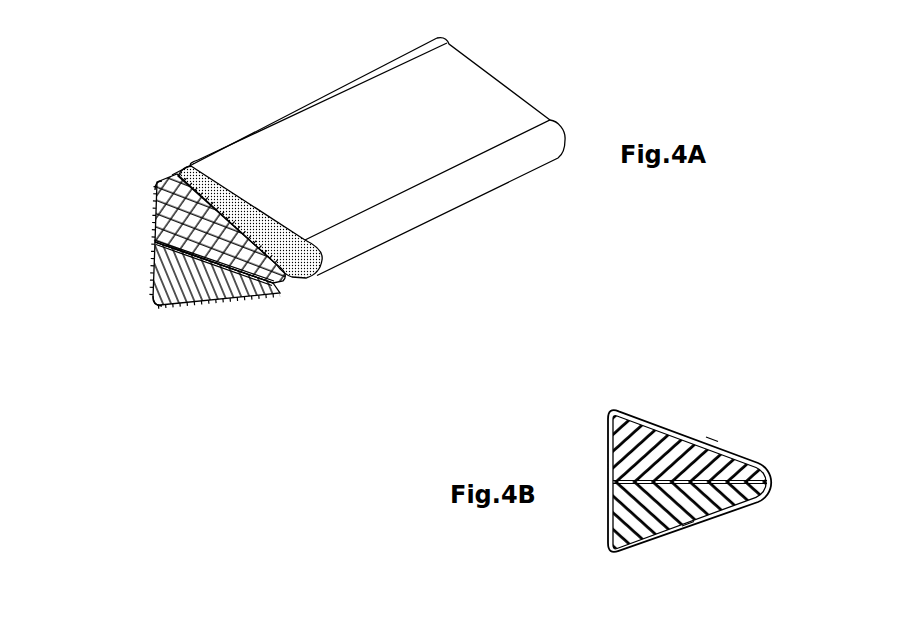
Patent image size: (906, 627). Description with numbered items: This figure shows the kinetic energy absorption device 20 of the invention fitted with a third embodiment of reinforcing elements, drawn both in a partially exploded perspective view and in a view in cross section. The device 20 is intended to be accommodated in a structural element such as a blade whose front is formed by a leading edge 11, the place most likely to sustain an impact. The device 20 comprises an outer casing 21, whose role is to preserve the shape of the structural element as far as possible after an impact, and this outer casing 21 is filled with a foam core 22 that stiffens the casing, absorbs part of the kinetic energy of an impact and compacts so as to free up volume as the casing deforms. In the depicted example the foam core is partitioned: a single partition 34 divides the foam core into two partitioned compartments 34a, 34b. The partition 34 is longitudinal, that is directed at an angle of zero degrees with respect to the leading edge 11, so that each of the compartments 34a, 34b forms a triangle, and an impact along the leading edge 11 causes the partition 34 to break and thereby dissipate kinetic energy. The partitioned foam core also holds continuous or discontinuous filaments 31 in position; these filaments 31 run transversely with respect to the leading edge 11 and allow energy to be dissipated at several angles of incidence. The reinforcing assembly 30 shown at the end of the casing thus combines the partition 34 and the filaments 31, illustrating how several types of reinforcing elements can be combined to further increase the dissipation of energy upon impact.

In FIG. 4A, the leading edge 11 is at (428, 222).
In FIG. 4A, the kinetic energy absorption device 20 is at (347, 141).
In FIG. 4A, the outer casing 21 is at (198, 158).
In FIG. 4A, the foam core 22 is at (176, 172).
In FIG. 4A, the triangular edge member 30 is at (201, 267).
In FIG. 4A, the filaments 31 is at (157, 216).
In FIG. 4B, the filaments 31 is at (653, 417).
In FIG. 4A, the partition 34 is at (153, 248).
In FIG. 4B, the partition 34 is at (777, 470).
In FIG. 4A, the partitioned compartment 34a is at (161, 307).
In FIG. 4B, the partitioned compartment 34a is at (689, 527).
In FIG. 4A, the partitioned compartment 34b is at (157, 182).
In FIG. 4B, the partitioned compartment 34b is at (712, 443).